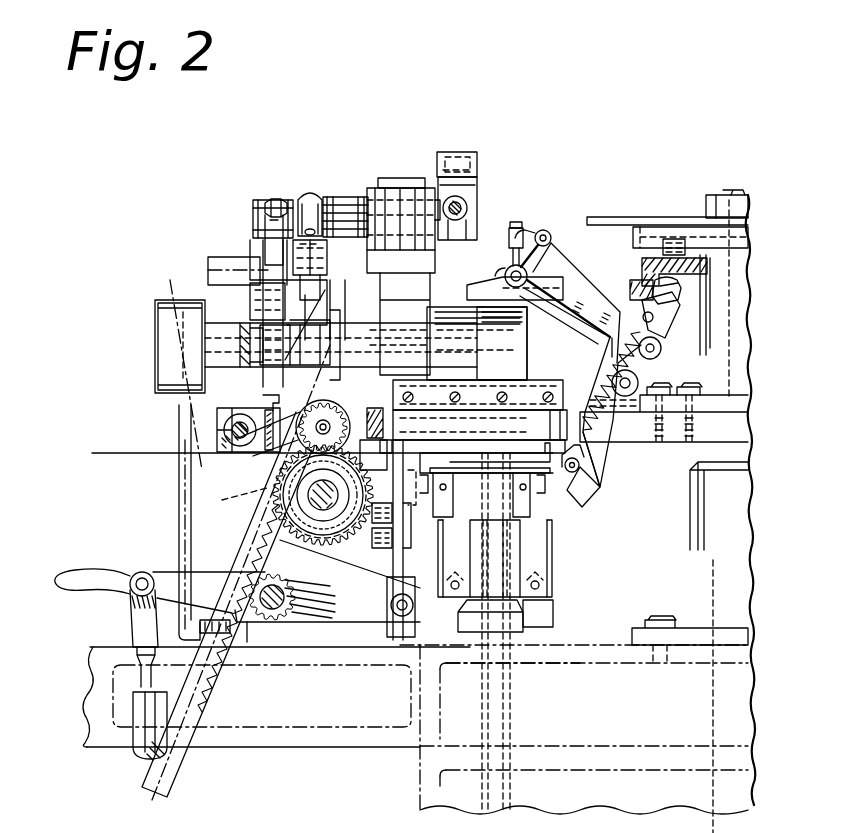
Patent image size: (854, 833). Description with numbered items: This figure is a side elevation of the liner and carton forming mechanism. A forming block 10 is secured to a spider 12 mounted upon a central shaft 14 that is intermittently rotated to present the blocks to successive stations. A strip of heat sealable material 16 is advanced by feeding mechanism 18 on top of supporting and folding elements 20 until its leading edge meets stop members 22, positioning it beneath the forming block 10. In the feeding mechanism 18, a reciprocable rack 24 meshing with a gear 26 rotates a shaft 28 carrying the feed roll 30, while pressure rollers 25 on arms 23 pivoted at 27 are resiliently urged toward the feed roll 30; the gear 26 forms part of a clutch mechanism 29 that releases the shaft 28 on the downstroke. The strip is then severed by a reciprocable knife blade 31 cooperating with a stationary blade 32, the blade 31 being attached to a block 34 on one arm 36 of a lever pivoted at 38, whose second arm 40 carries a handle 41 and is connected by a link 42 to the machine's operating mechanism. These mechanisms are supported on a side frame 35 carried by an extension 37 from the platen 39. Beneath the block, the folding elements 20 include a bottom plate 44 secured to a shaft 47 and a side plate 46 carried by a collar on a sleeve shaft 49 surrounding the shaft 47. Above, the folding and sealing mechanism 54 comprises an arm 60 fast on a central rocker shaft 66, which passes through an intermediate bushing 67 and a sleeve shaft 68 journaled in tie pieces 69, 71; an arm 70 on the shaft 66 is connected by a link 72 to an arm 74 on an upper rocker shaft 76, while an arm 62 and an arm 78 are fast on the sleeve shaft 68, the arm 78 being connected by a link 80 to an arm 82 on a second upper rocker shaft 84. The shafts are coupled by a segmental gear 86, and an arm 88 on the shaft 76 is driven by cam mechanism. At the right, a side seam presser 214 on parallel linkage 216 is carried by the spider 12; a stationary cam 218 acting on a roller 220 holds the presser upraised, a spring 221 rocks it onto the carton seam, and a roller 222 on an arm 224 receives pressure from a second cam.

The forming block 10 is at (465, 428).
The spider 12 is at (670, 402).
The central shaft 14 is at (732, 190).
The strip of heat sealable material 16 is at (94, 451).
The feeding mechanism 18 is at (192, 507).
The supporting and folding elements 20 is at (551, 528).
The stop members 22 is at (556, 498).
The arms 23 is at (217, 440).
The reciprocable rack 24 is at (286, 568).
The pressure rollers 25 is at (336, 424).
The gear 26 is at (268, 496).
The pivot 27 is at (230, 426).
The shaft 28 is at (329, 506).
The clutch mechanism 29 is at (380, 546).
The feed roll 30 is at (283, 480).
The knife blade 31 is at (403, 524).
The stationary blade 32 is at (397, 428).
The block 34 is at (373, 584).
The side frame 35 is at (178, 484).
The arm 36 is at (322, 648).
The extension 37 is at (258, 749).
The pivot 38 is at (273, 620).
The platen 39 is at (420, 745).
The second arm 40 is at (165, 572).
The handle 41 is at (62, 574).
The link 42 is at (137, 749).
The bottom plate 44 is at (464, 466).
The side plate 46 is at (531, 543).
The shaft 47 is at (488, 566).
The sleeve shaft 49 is at (513, 686).
The folding and sealing mechanism 54 is at (523, 344).
The arm 60 is at (556, 382).
The arm 62 is at (544, 380).
The central rocker shaft 66 is at (173, 300).
The intermediate bushing 67 is at (465, 428).
The sleeve shaft 68 is at (438, 318).
The tie piece 69 is at (230, 323).
The arm 70 is at (260, 366).
The tie piece 71 is at (405, 178).
The link 72 is at (252, 312).
The arm 74 is at (274, 199).
The upper rocker shaft 76 is at (251, 217).
The arm 78 is at (265, 406).
The link 80 is at (312, 332).
The arm 82 is at (327, 257).
The second upper rocker shaft 84 is at (338, 202).
The segmental gear 86 is at (316, 194).
The arm 88 is at (457, 152).
The side seam presser 214 is at (477, 284).
The parallel linkage 216 is at (575, 237).
The stationary cam 218 is at (640, 268).
The roller 220 is at (668, 294).
The spring 221 is at (662, 348).
The roller 222 is at (598, 492).
The arm 224 is at (594, 460).